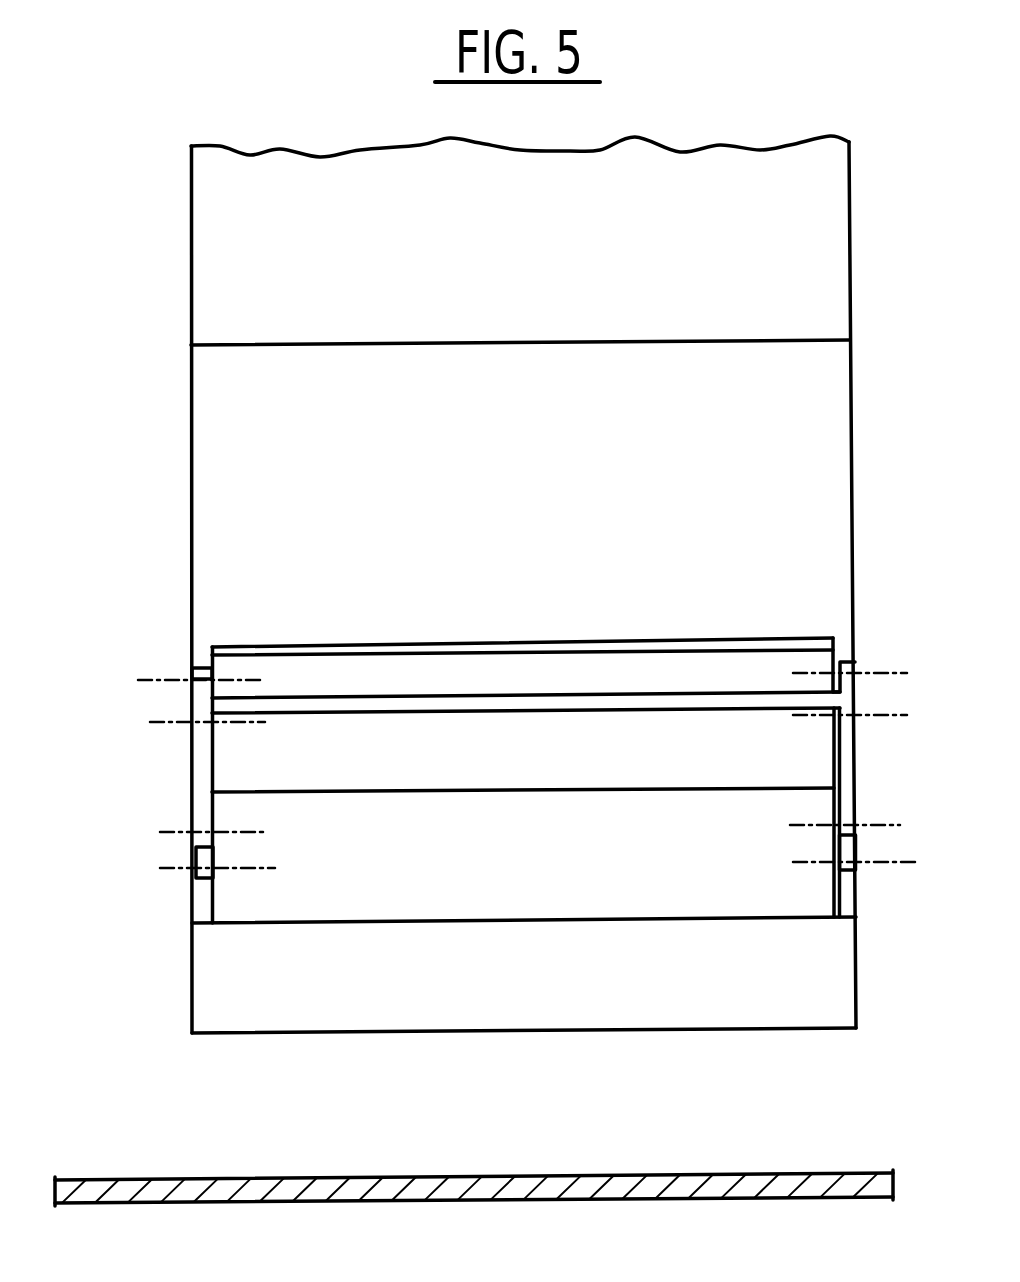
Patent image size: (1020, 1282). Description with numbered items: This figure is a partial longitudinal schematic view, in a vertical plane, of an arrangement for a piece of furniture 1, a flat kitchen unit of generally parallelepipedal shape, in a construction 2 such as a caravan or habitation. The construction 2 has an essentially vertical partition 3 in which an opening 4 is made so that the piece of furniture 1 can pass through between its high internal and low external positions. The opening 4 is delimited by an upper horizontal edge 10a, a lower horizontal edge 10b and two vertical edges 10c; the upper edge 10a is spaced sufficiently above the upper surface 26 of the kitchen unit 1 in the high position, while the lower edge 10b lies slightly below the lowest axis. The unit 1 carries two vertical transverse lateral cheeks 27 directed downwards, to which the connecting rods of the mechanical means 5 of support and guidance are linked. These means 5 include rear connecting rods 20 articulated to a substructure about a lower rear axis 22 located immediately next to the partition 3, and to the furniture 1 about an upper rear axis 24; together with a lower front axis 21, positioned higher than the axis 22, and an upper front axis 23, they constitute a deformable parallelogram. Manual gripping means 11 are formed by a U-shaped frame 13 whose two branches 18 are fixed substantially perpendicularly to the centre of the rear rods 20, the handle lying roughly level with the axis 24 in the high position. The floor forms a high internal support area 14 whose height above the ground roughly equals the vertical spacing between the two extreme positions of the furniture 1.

The piece of furniture 1 is at (340, 672).
The construction 2 is at (122, 1197).
The partition 3 is at (123, 947).
The opening 4 is at (248, 507).
The mechanical means of support and guidance 5 is at (200, 752).
The upper horizontal edge 10a is at (412, 345).
The lower horizontal edge 10b is at (400, 1033).
The vertical edges 10c is at (192, 596).
The manual gripping means 11 is at (484, 697).
The U-shaped frame 13 is at (682, 693).
The high internal support area 14 is at (96, 1195).
The branches 18 is at (856, 722).
The rear connecting rods 20 is at (856, 845).
The lower front axis 21 is at (160, 832).
The lower rear axis 22 is at (160, 868).
The upper front axis 23 is at (210, 669).
The upper rear axis 24 is at (150, 722).
The upper surface 26 is at (763, 640).
The vertical transverse lateral cheeks 27 is at (839, 662).